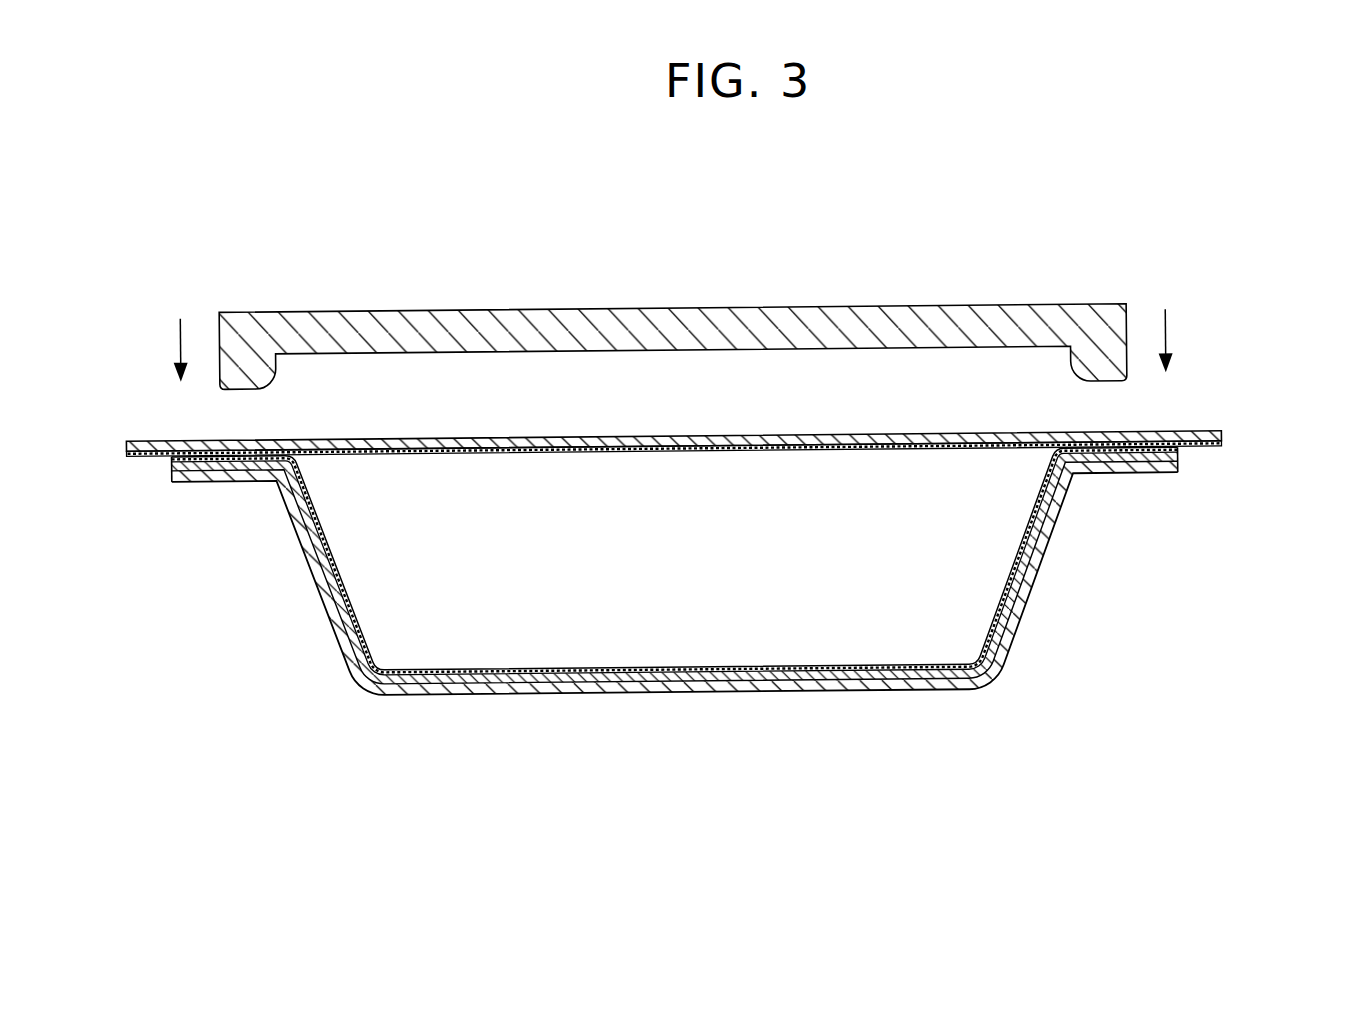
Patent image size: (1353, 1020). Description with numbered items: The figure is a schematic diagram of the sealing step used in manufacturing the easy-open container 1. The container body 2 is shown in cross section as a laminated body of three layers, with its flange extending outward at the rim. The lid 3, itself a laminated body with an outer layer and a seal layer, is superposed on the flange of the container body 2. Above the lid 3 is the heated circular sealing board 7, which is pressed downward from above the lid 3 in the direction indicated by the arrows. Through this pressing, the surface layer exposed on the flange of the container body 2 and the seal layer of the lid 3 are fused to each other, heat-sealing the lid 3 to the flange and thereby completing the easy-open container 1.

The easy-open container 1 is at (734, 533).
The container body 2 is at (737, 533).
The lid 3 is at (714, 429).
The heated circular sealing board 7 is at (771, 318).